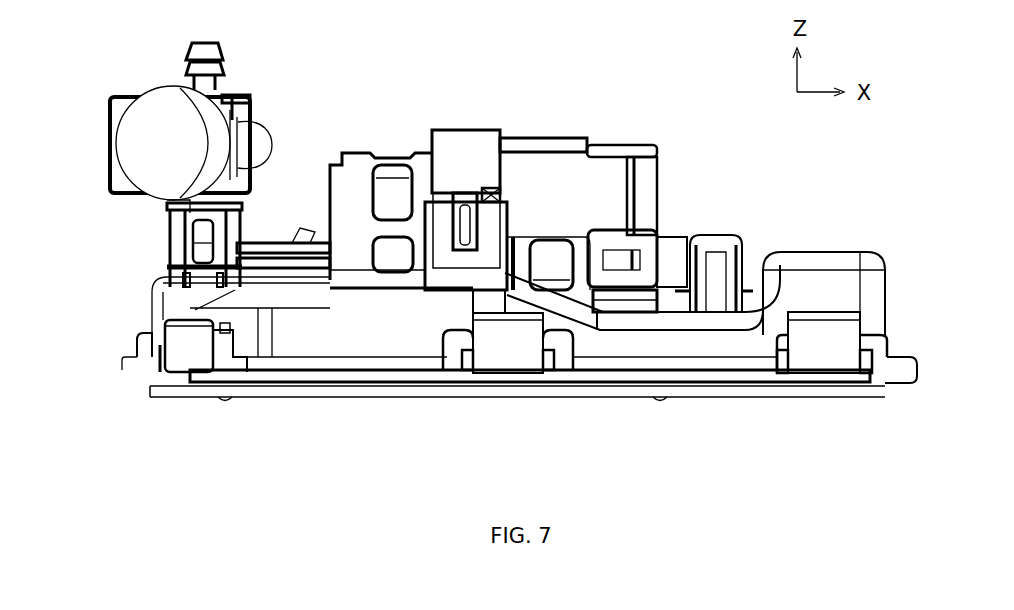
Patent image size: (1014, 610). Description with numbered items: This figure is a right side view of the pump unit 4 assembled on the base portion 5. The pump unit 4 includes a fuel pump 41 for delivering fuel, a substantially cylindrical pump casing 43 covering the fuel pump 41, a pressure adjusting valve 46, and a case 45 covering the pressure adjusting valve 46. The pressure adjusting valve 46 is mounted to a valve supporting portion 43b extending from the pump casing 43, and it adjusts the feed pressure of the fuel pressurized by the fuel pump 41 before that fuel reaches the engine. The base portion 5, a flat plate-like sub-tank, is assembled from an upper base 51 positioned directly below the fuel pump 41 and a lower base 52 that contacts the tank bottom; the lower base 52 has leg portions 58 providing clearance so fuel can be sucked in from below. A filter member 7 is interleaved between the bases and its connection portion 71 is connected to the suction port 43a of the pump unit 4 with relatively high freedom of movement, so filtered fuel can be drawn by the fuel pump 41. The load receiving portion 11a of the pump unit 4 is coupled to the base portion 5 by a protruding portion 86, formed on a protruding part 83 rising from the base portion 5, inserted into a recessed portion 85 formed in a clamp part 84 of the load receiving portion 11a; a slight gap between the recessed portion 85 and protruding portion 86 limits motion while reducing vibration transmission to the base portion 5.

The pump unit 4 is at (673, 109).
The base portion 5 is at (132, 332).
The filter member 7 is at (723, 367).
The load receiving portion 11a is at (448, 157).
The fuel pump 41 is at (390, 190).
The pump casing 43 is at (353, 212).
The suction port 43a is at (672, 257).
The valve supporting portion 43b is at (258, 250).
The case for the pressure adjusting valve 45 is at (157, 106).
The pressure adjusting valve 46 is at (150, 135).
The upper base 51 is at (835, 287).
The lower base 52 is at (883, 362).
The leg portions 58 is at (223, 400).
The connection portion 71 is at (740, 302).
The protruding part 83 is at (488, 297).
The clamp part 84 is at (488, 228).
The recessed portion 85 is at (500, 186).
The protruding portion 86 is at (465, 225).